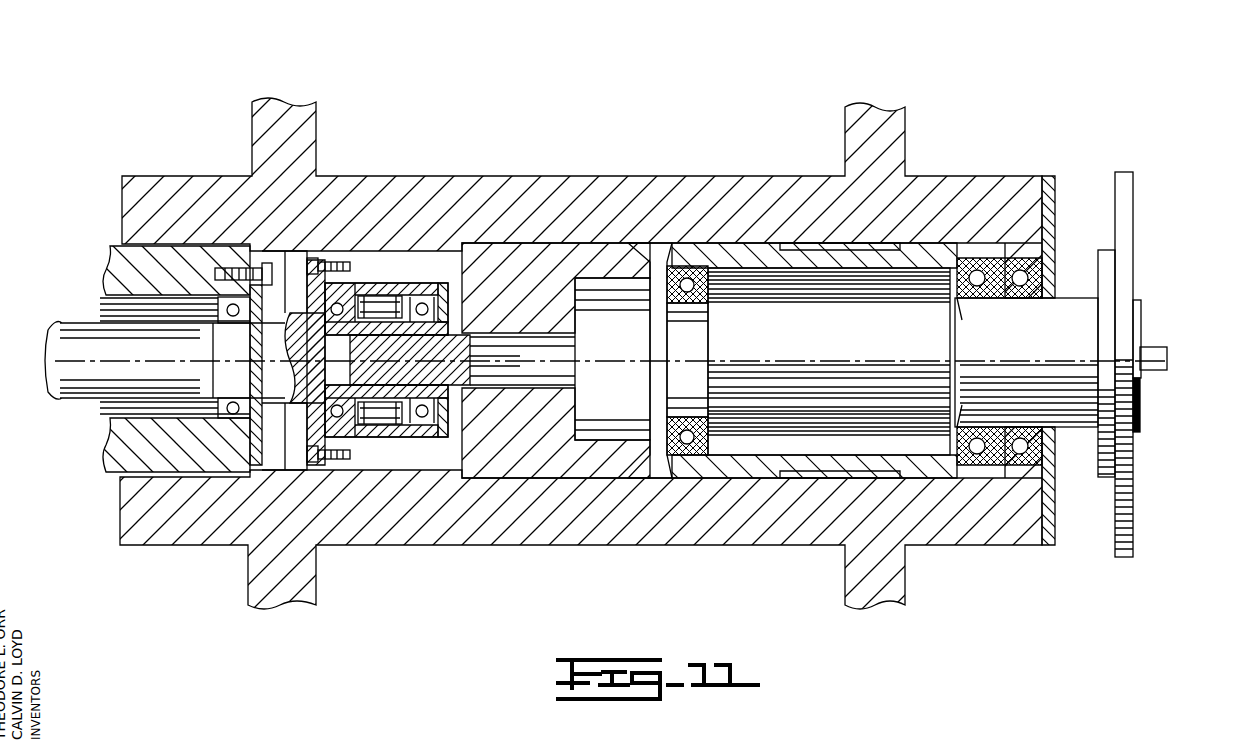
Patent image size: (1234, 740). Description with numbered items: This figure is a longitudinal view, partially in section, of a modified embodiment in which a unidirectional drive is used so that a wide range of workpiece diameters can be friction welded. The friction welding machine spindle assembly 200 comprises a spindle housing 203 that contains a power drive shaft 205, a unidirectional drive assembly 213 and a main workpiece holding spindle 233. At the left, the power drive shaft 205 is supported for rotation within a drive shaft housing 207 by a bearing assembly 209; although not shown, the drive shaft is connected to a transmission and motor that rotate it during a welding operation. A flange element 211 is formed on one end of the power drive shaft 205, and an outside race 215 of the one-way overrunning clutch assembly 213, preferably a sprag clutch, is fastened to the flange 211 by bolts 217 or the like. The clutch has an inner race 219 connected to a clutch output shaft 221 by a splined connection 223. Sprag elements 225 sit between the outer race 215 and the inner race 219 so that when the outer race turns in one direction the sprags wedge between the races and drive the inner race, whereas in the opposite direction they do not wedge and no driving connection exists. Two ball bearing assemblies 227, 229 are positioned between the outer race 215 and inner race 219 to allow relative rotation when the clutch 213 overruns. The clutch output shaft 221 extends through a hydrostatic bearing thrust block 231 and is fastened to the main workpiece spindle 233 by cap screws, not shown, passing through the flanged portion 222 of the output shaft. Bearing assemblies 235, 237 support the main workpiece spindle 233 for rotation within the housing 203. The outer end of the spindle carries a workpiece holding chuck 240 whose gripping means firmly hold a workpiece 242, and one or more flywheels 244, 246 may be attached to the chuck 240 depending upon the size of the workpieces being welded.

The friction welding machine spindle assembly 200 is at (570, 96).
The spindle housing 203 is at (455, 150).
The power drive shaft 205 is at (80, 332).
The drive shaft housing 207 is at (110, 262).
The bearing assembly 209 is at (228, 415).
The flange element 211 is at (268, 248).
The unidirectional drive assembly 213 is at (420, 240).
The outside race 215 is at (368, 278).
The bolts 217 is at (294, 462).
The inner race 219 is at (462, 360).
The clutch output shaft 221 is at (565, 348).
The flanged portion 222 is at (660, 358).
The splined connection 223 is at (455, 402).
The sprag elements 225 is at (388, 283).
The ball bearing assembly 227 is at (376, 437).
The ball bearing assembly 229 is at (455, 426).
The hydrostatic bearing thrust block 231 is at (578, 245).
The main workpiece holding spindle 233 is at (898, 345).
The bearing assembly 235 is at (708, 262).
The bearing assembly 237 is at (980, 240).
The workpiece holding chuck 240 is at (1138, 405).
The workpiece 242 is at (1158, 355).
The flywheel 244 is at (1120, 185).
The flywheel 246 is at (1107, 326).